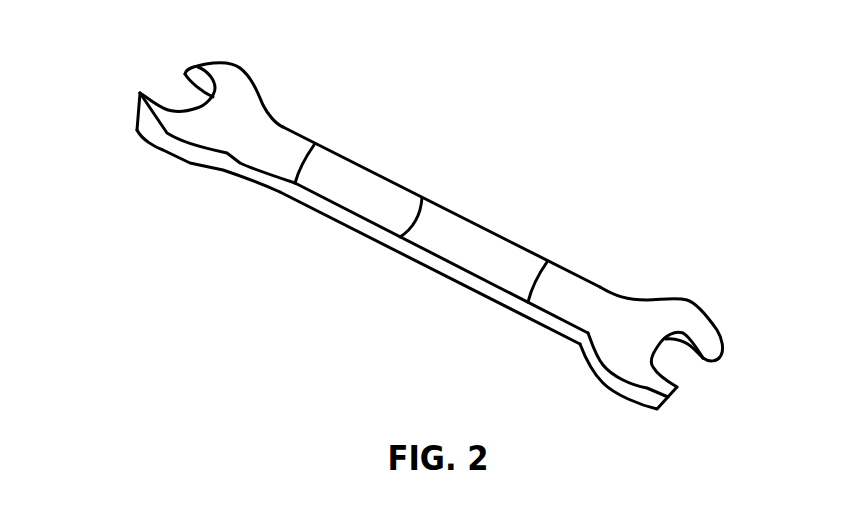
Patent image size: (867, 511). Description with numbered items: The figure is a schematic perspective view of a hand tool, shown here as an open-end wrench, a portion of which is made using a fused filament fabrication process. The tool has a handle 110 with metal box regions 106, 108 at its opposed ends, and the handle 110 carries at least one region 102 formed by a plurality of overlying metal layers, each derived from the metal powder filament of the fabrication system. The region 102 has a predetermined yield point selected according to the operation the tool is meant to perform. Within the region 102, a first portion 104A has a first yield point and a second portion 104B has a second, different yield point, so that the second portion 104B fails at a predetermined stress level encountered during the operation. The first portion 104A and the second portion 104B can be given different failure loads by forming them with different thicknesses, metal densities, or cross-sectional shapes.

The region 102 is at (418, 184).
The first portion 104A is at (363, 212).
The second portion 104B is at (475, 275).
The metal box region 106 is at (693, 320).
The metal box region 108 is at (167, 132).
The handle 110 is at (283, 125).